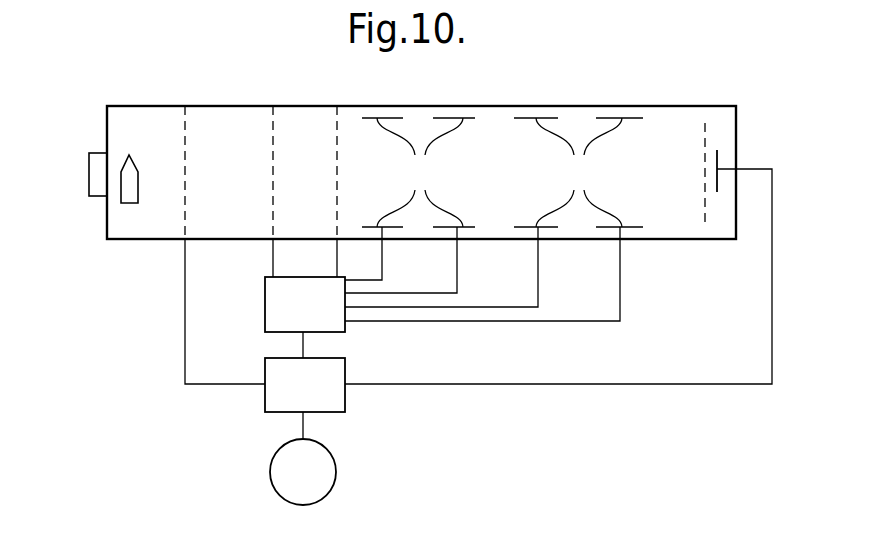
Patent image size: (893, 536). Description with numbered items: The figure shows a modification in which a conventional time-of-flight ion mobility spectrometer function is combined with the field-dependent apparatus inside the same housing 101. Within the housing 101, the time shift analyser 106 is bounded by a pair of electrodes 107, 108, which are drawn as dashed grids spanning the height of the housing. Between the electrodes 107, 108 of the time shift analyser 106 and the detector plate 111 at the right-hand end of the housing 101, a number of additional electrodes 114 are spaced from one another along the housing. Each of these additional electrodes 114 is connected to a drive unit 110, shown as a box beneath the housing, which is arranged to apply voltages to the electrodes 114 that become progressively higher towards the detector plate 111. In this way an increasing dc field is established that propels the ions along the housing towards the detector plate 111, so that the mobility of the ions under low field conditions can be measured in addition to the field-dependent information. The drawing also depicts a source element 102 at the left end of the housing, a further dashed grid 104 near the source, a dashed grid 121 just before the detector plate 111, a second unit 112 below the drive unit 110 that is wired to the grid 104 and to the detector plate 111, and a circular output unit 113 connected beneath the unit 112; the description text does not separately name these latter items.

The housing 101 is at (680, 106).
The ion source 102 is at (95, 197).
The first grid electrode 104 is at (182, 122).
The time shift analyser 106 is at (303, 124).
The electrode 107 is at (273, 156).
The electrode 108 is at (342, 123).
The drive unit 110 is at (265, 298).
The detector plate 111 is at (717, 151).
The controller / processor 112 is at (345, 366).
The display / recorder 113 is at (336, 470).
The additional electrodes 114 is at (494, 219).
The aperture grid 121 is at (705, 122).